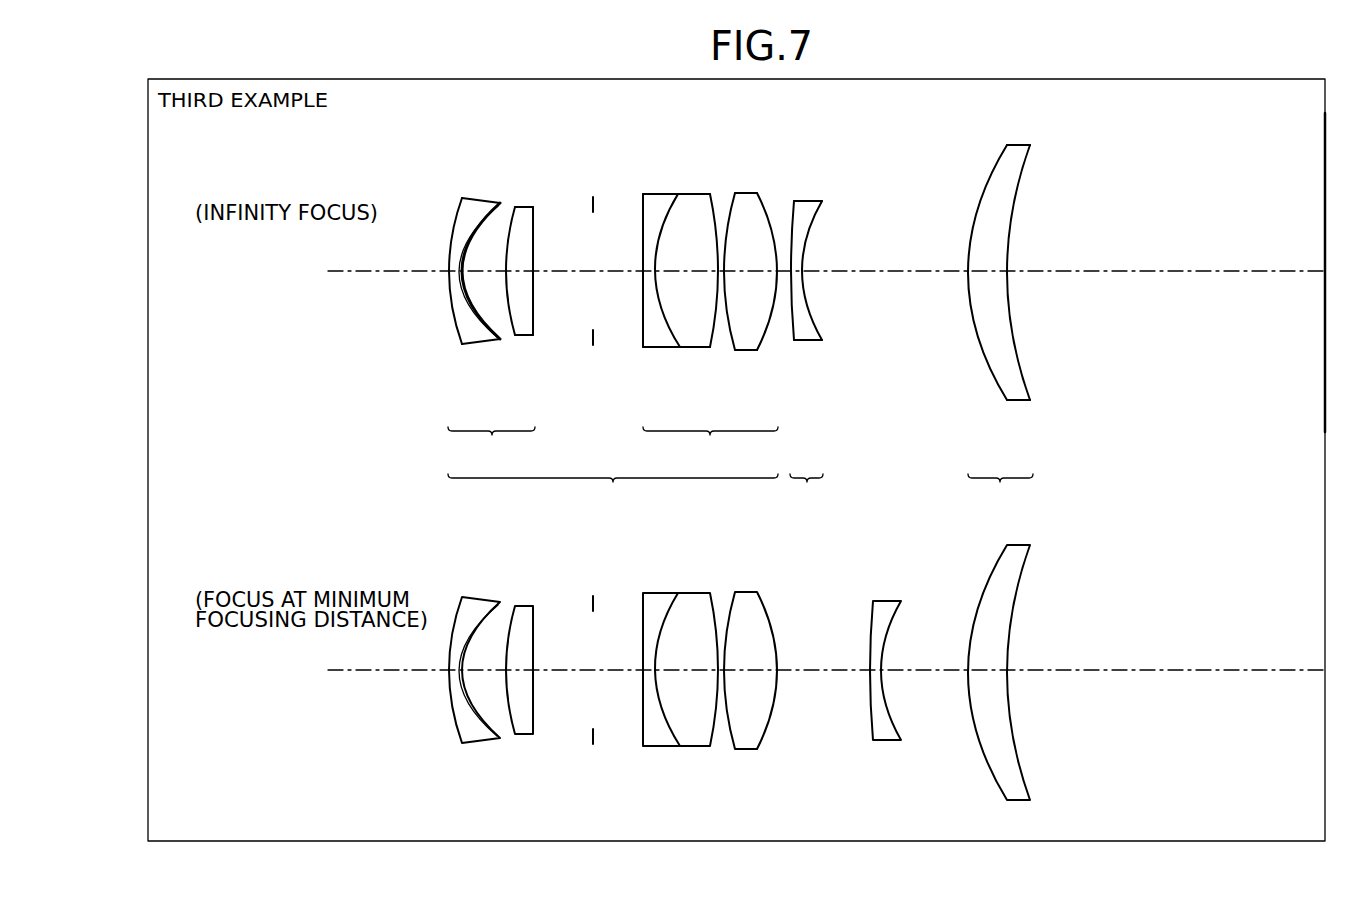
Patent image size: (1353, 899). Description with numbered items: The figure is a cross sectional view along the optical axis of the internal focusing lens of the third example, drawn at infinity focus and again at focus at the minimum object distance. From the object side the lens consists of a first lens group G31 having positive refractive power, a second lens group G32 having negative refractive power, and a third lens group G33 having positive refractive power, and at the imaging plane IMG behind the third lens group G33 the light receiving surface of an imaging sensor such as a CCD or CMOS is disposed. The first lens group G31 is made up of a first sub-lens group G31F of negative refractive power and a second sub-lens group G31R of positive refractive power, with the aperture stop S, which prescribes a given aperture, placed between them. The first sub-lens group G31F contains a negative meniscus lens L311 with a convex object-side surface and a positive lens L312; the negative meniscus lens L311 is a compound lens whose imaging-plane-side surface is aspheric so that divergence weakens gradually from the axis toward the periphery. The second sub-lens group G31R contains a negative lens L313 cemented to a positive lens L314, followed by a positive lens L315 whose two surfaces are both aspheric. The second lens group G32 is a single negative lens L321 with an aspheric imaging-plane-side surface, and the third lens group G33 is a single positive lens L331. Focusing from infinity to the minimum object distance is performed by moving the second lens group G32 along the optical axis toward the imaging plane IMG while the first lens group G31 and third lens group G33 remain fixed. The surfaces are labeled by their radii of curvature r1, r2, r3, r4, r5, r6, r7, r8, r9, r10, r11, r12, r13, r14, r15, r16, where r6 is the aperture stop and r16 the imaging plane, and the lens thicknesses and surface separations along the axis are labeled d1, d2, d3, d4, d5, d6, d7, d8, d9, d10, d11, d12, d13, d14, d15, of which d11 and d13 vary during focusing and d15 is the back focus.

The negative meniscus lens L311 is at (454, 217).
The positive lens L312 is at (533, 213).
The negative lens L313 is at (637, 219).
The positive lens L314 is at (697, 219).
The positive lens L315 is at (754, 220).
The negative lens L321 is at (826, 215).
The positive lens L331 is at (1004, 245).
The aperture stop S is at (573, 246).
The imaging plane IMG is at (1291, 272).
The first sub-lens group G31F is at (491, 448).
The second sub-lens group G31R is at (710, 448).
The first lens group G31 is at (613, 495).
The second lens group G32 is at (806, 495).
The third lens group G33 is at (1000, 495).
The radius of curvature r1 is at (450, 243).
The radius of curvature r2 is at (468, 232).
The radius of curvature r3 is at (469, 244).
The radius of curvature r4 is at (513, 222).
The radius of curvature r5 is at (535, 245).
The radius of curvature r6 is at (591, 201).
The radius of curvature r7 is at (643, 236).
The radius of curvature r8 is at (675, 200).
The radius of curvature r9 is at (712, 200).
The radius of curvature r10 is at (727, 200).
The radius of curvature r11 is at (760, 205).
The radius of curvature r12 is at (794, 207).
The radius of curvature r13 is at (808, 238).
The radius of curvature r14 is at (978, 193).
The radius of curvature r15 is at (1022, 183).
The radius of curvature r16 is at (1325, 150).
The thickness d1 is at (455, 272).
The thickness d2 is at (459, 276).
The distance between surfaces d3 is at (487, 274).
The thickness d4 is at (520, 274).
The distance between surfaces d5 is at (566, 273).
The distance between surfaces d6 is at (620, 273).
The thickness d7 is at (650, 273).
The thickness d8 is at (688, 273).
The distance between surfaces d9 is at (718, 273).
The thickness d10 is at (757, 273).
The distance between surfaces d11 is at (783, 273).
The thickness d12 is at (800, 273).
The distance between surfaces d13 is at (898, 273).
The thickness d14 is at (990, 273).
The distance between surfaces d15 is at (1150, 273).